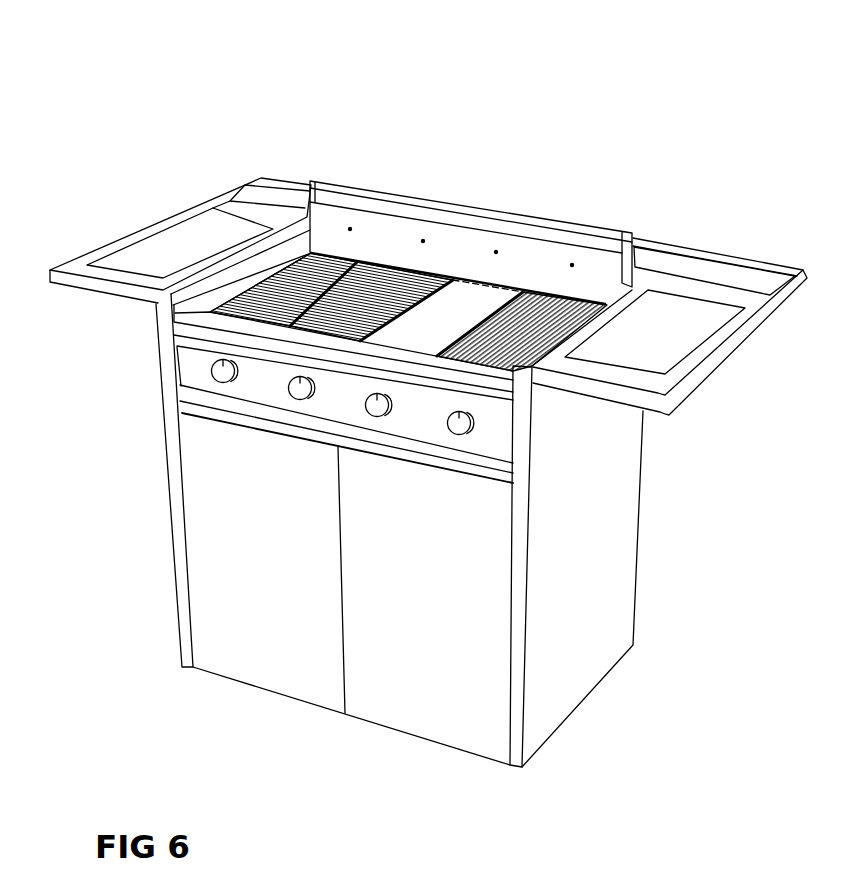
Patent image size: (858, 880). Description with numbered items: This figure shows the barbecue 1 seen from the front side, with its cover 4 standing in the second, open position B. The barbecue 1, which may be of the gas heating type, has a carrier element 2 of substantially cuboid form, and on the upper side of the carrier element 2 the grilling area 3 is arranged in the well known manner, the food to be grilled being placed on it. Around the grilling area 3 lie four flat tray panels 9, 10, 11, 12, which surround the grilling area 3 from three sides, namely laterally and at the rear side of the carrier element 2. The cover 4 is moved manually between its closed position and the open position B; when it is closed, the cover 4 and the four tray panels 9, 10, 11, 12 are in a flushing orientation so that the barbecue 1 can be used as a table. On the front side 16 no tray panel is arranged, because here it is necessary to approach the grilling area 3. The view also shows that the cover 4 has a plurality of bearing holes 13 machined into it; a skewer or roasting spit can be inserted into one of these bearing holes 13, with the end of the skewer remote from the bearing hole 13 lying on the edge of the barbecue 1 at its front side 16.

The barbecue 1 is at (528, 142).
The carrier element 2 is at (580, 678).
The grilling area 3 is at (381, 283).
The cover 4 is at (598, 247).
The tray panel 9 is at (662, 329).
The tray panel 10 is at (739, 265).
The tray panel 11 is at (284, 195).
The tray panel 12 is at (197, 232).
The bearing holes 13 is at (423, 241).
The front side 16 is at (357, 738).
The second, open position B is at (561, 172).